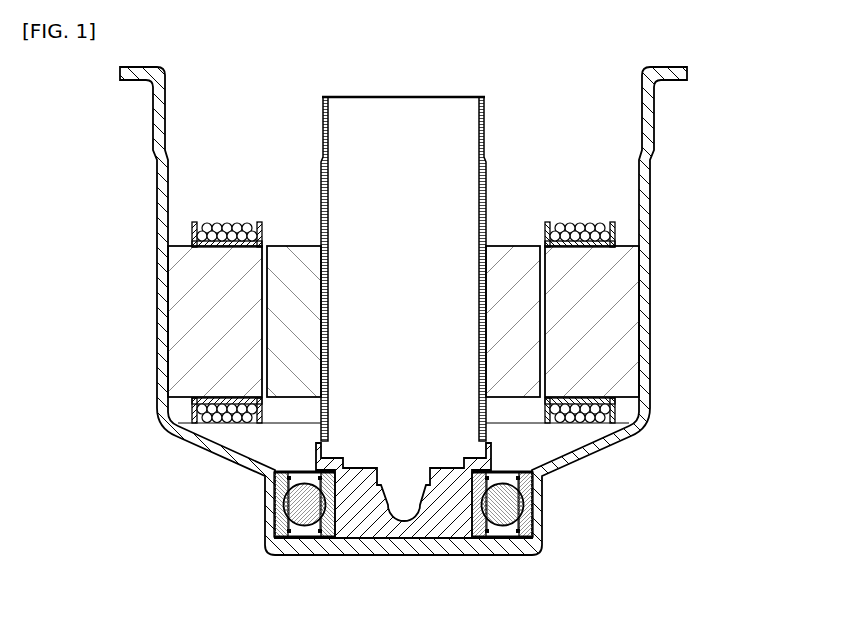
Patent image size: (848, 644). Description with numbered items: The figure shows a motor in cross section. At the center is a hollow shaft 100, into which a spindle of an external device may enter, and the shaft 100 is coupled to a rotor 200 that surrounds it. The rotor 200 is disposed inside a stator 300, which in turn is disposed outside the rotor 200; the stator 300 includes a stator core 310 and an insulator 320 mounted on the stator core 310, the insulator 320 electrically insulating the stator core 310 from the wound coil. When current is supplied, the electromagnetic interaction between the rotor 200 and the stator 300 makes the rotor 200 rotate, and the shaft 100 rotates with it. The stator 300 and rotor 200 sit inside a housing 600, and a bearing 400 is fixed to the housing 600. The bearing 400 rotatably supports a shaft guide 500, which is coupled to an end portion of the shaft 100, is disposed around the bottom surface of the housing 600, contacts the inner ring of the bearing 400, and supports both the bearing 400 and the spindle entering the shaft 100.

The shaft 100 is at (310, 415).
The rotor 200 is at (518, 348).
The stator 300 is at (485, 317).
The stator core 310 is at (617, 315).
The insulator 320 is at (618, 243).
The bearing 400 is at (270, 526).
The shaft guide 500 is at (370, 528).
The housing 600 is at (147, 309).